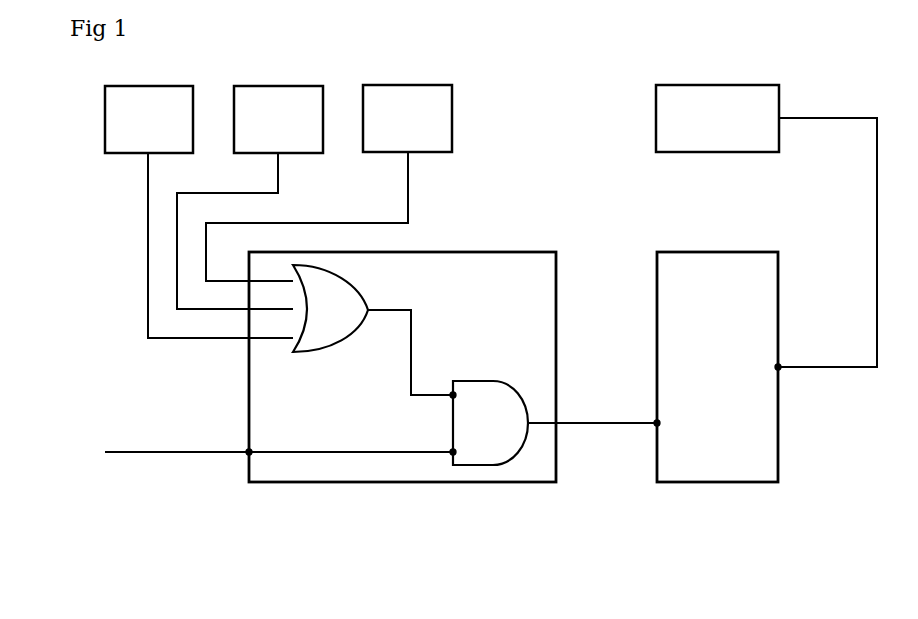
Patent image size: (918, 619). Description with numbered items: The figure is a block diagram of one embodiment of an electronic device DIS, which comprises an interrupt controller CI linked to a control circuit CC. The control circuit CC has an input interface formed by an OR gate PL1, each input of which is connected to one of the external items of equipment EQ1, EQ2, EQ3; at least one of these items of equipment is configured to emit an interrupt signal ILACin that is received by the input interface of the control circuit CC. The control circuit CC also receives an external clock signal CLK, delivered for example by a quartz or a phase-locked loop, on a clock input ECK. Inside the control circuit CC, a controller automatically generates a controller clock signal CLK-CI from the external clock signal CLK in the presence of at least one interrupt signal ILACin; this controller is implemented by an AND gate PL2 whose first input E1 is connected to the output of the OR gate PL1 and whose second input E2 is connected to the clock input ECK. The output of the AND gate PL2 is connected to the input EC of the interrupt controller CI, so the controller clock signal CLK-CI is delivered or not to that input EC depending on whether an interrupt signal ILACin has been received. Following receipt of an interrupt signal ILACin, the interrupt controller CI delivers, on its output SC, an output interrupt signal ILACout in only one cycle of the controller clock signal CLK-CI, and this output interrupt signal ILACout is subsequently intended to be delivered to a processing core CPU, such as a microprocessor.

The external item of equipment EQ1 is at (199, 212).
The external item of equipment EQ2 is at (250, 197).
The external item of equipment EQ3 is at (329, 183).
The processing core CPU is at (766, 226).
The interrupt signal ILACin is at (204, 262).
The control circuit CC is at (320, 483).
The OR gate PL1 is at (335, 347).
The AND gate PL2 is at (468, 470).
The first input E1 is at (453, 392).
The second input E2 is at (452, 455).
The external clock signal CLK is at (279, 440).
The clock input ECK is at (247, 455).
The controller clock signal CLK-CI is at (592, 410).
The input EC is at (655, 427).
The interrupt controller CI is at (717, 367).
The output interrupt signal ILACout is at (827, 353).
The output SC is at (780, 370).
The electronic device DIS is at (255, 527).